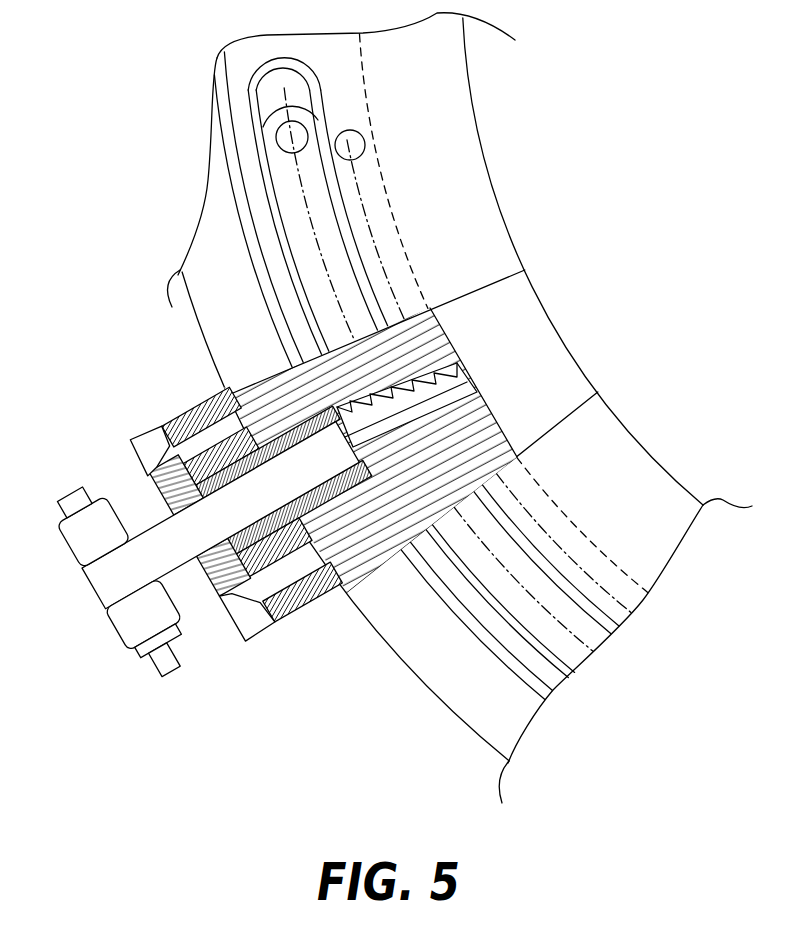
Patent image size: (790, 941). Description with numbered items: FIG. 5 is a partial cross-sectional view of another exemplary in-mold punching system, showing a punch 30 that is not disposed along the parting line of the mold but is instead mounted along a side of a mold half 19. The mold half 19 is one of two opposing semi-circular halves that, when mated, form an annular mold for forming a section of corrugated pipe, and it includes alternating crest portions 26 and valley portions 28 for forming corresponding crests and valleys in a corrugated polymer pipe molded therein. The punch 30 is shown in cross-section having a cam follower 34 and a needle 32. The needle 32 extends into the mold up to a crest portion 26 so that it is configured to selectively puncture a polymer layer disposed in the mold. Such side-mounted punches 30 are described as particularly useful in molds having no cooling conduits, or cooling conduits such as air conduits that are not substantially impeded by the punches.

The mold half 19 is at (473, 182).
The crest portion 26 is at (585, 533).
The valley portion 28 is at (607, 404).
The punch 30 is at (106, 459).
The needle 32 is at (457, 356).
The cam follower 34 is at (135, 624).